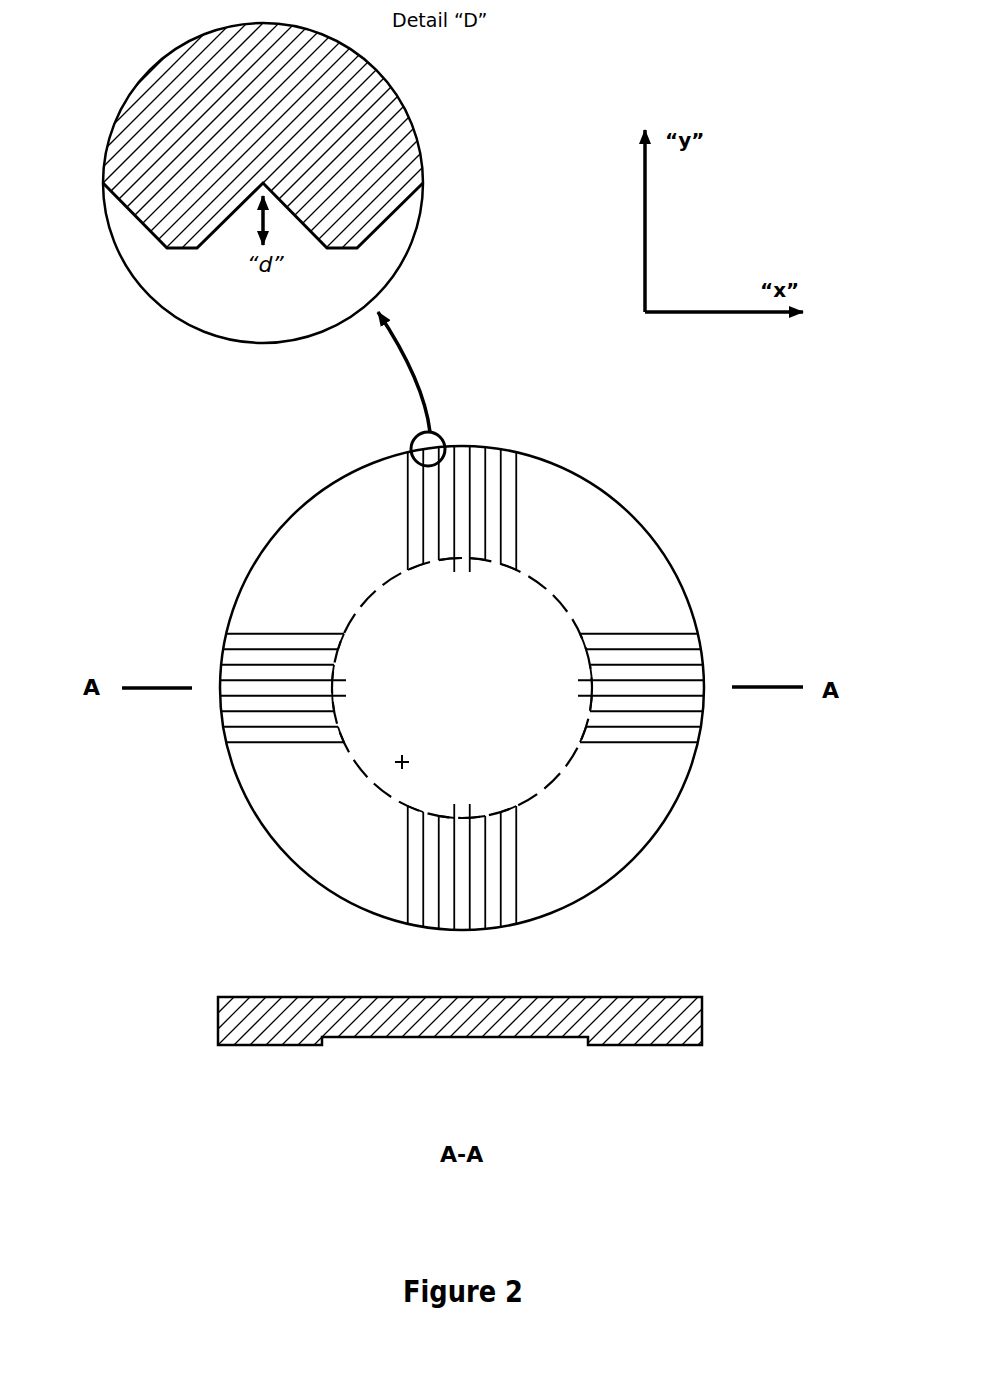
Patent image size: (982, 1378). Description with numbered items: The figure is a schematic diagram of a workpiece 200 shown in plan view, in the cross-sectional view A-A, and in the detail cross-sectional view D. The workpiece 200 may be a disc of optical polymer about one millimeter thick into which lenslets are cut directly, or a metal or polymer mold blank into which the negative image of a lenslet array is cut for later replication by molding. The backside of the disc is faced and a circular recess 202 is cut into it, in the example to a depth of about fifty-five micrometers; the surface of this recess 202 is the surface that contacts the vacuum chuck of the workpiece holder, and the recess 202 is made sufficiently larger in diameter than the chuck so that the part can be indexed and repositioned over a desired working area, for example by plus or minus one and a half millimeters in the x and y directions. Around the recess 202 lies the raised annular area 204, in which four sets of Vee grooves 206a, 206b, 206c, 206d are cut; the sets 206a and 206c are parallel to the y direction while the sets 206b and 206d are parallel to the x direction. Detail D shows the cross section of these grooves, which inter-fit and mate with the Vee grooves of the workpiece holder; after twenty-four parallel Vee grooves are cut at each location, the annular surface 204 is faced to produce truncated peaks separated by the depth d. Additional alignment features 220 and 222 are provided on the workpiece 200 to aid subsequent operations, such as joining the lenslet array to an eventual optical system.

The workpiece 200 is at (830, 72).
The circular recess 202 is at (562, 1050).
The raised annular area 204 is at (177, 255).
The set of Vee grooves 206a is at (263, 313).
The set of Vee grooves 206b is at (192, 650).
The set of Vee grooves 206c is at (445, 937).
The set of Vee grooves 206d is at (718, 662).
The alignment feature 220 is at (477, 585).
The alignment feature 222 is at (390, 768).